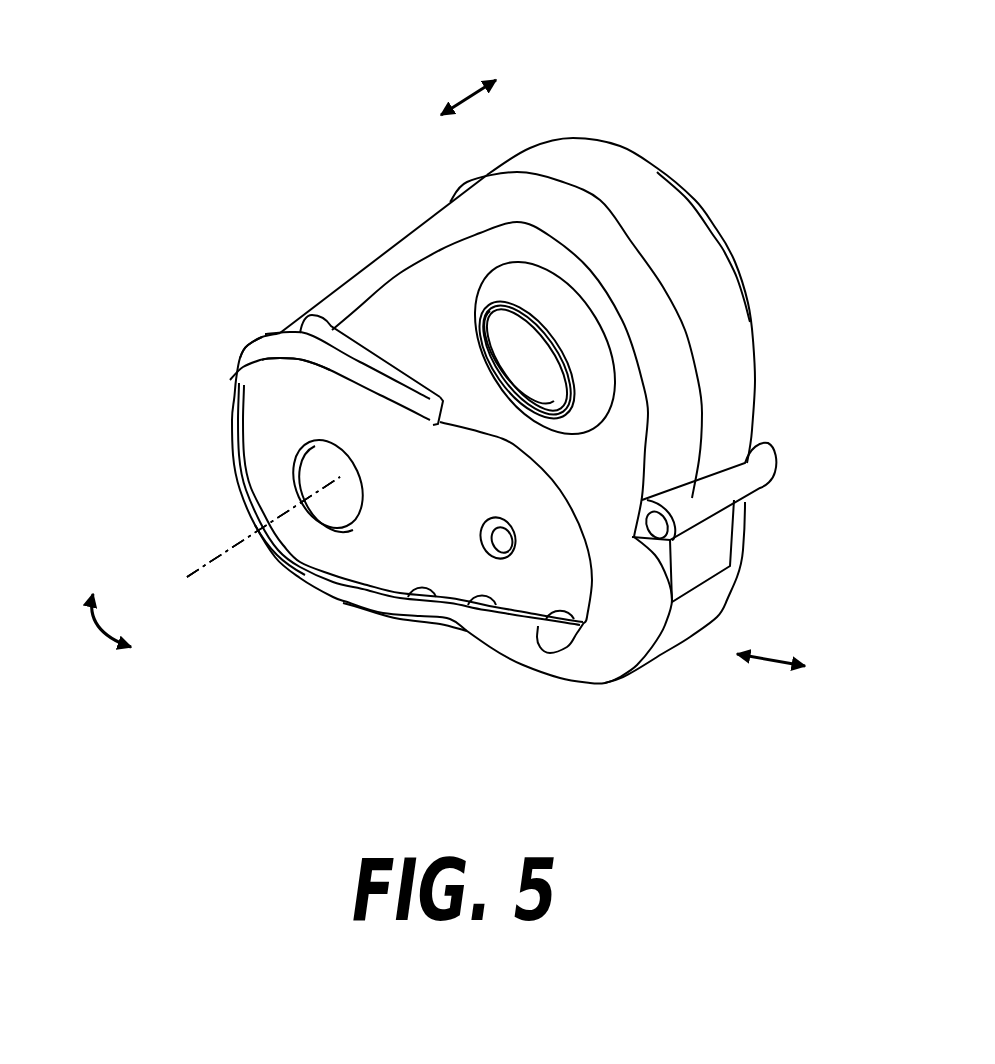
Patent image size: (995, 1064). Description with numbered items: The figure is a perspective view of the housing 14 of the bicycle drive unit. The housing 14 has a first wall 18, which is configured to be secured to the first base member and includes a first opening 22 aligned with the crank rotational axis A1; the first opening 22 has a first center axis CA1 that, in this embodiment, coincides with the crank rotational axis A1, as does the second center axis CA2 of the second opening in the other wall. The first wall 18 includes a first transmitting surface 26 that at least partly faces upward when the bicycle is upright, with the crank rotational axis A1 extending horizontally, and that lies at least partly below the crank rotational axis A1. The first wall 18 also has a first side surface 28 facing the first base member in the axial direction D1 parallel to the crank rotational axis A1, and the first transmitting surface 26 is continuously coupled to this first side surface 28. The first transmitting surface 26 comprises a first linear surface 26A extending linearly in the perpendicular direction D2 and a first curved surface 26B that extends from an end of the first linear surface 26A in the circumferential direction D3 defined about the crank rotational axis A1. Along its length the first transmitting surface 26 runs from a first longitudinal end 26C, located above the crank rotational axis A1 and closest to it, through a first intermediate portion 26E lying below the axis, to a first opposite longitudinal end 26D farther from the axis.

The housing 14 is at (603, 129).
The first wall 18 is at (393, 337).
The first opening 22 is at (317, 447).
The first transmitting surface 26 is at (447, 709).
The first linear surface 26A is at (412, 598).
The first curved surface 26B is at (297, 553).
The first longitudinal end 26C is at (237, 380).
The first opposite longitudinal end 26D is at (545, 620).
The first intermediate portion 26E is at (470, 608).
The first side surface 28 is at (297, 387).
The crank rotational axis A1 is at (197, 568).
The first center axis CA1 is at (263, 527).
The second center axis CA2 is at (263, 527).
The axial direction D1 is at (472, 93).
The perpendicular direction D2 is at (772, 660).
The circumferential direction D3 is at (107, 633).